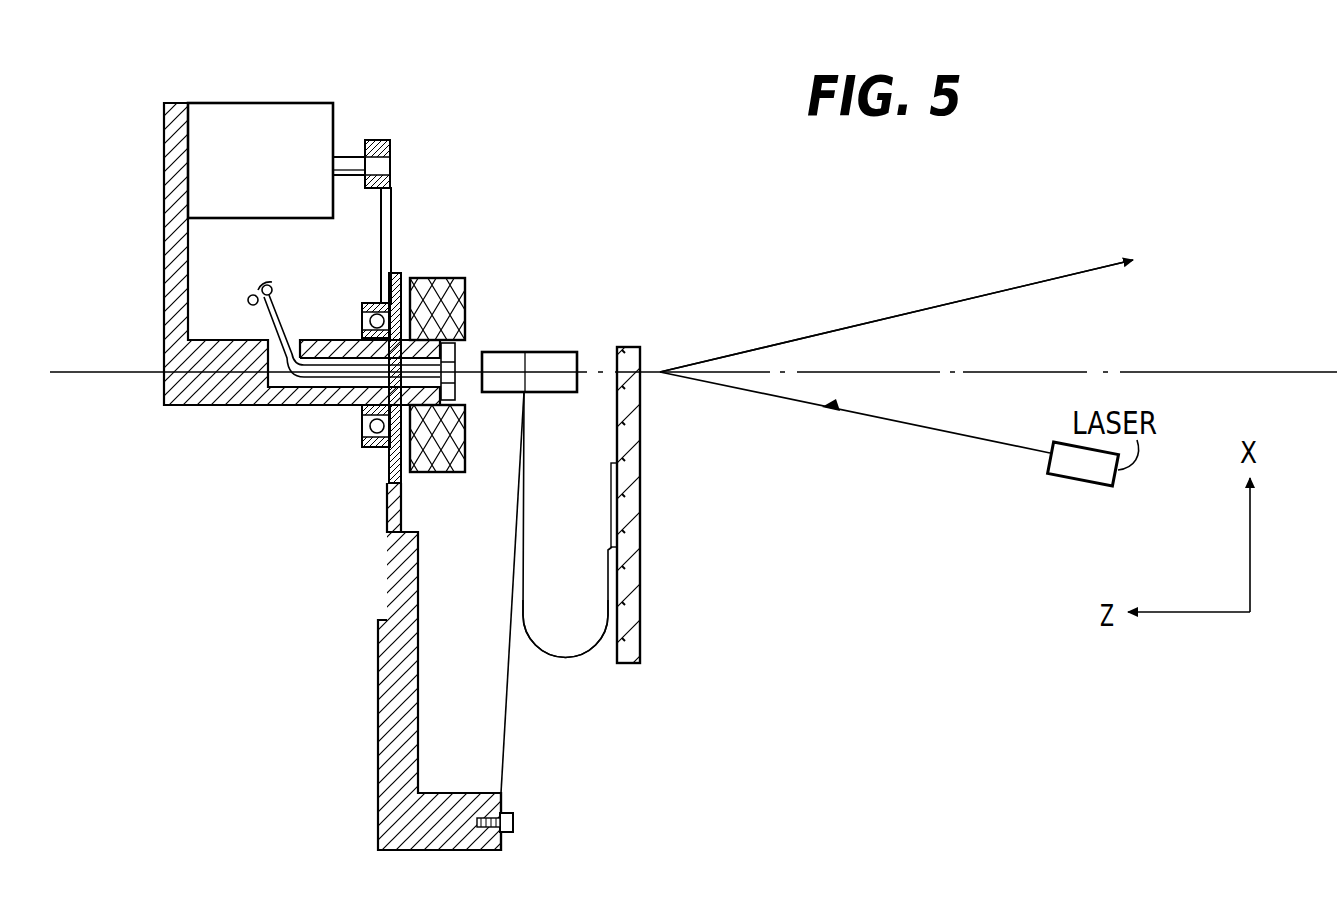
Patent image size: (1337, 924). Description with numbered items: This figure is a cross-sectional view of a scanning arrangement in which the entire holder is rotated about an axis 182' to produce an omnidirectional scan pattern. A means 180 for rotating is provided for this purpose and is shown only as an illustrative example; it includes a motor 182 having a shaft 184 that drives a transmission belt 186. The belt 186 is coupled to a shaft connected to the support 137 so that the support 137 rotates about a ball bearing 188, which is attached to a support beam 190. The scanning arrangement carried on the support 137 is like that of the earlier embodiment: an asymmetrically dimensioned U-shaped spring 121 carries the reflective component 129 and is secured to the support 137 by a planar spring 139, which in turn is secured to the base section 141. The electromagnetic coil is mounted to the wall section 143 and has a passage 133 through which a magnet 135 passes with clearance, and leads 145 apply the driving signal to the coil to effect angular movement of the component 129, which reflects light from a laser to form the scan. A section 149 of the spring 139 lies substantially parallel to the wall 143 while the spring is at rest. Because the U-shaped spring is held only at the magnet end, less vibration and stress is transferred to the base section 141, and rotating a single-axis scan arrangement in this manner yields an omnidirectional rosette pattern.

The motor 182 is at (286, 221).
The means for rotating 180 is at (303, 88).
The shaft 184 is at (352, 157).
The transmission belt 186 is at (391, 217).
The ball bearing 188 is at (370, 303).
The passage 133 is at (465, 303).
The leads 145 is at (250, 270).
The support beam 190 is at (257, 402).
The magnet 135 is at (513, 352).
The planar spring 139 is at (511, 558).
The U-shaped spring 121 is at (572, 657).
The section of spring 149 is at (501, 708).
The component 129 is at (640, 645).
The wall section 143 is at (387, 523).
The support 137 is at (376, 684).
The base section 141 is at (446, 843).
The axis 182' is at (896, 316).